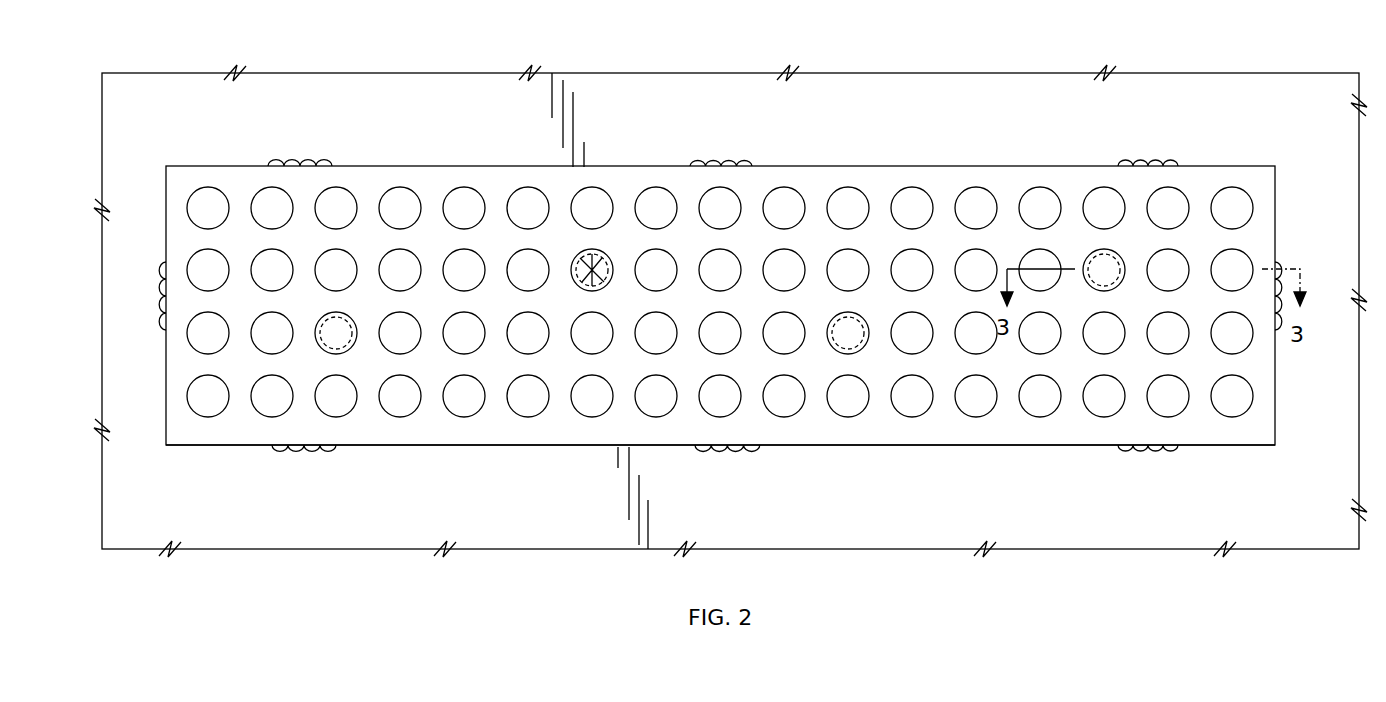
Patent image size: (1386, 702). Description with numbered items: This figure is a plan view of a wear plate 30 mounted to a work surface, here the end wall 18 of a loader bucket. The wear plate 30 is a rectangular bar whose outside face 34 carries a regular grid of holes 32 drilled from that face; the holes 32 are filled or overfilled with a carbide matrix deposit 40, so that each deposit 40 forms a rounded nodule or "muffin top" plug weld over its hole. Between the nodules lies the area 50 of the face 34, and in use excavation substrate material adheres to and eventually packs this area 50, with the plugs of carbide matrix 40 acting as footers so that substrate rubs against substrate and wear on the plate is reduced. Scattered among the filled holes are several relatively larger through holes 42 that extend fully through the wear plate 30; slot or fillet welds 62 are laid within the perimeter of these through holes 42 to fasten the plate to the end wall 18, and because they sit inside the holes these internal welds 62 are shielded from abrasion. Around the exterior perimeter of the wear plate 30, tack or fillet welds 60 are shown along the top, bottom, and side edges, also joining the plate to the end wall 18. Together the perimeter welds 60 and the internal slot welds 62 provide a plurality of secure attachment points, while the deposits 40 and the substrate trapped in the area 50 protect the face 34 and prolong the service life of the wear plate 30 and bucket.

The end wall 18 is at (1183, 78).
The wear plate 30 is at (932, 158).
The holes 32 is at (455, 208).
The outside face 34 is at (812, 435).
The carbide matrix deposit 40 is at (343, 268).
The through holes 42 is at (578, 300).
The area between deposits 50 is at (433, 340).
The tack or fillet welds 60 is at (1140, 162).
The slot or fillet welds 62 is at (574, 306).